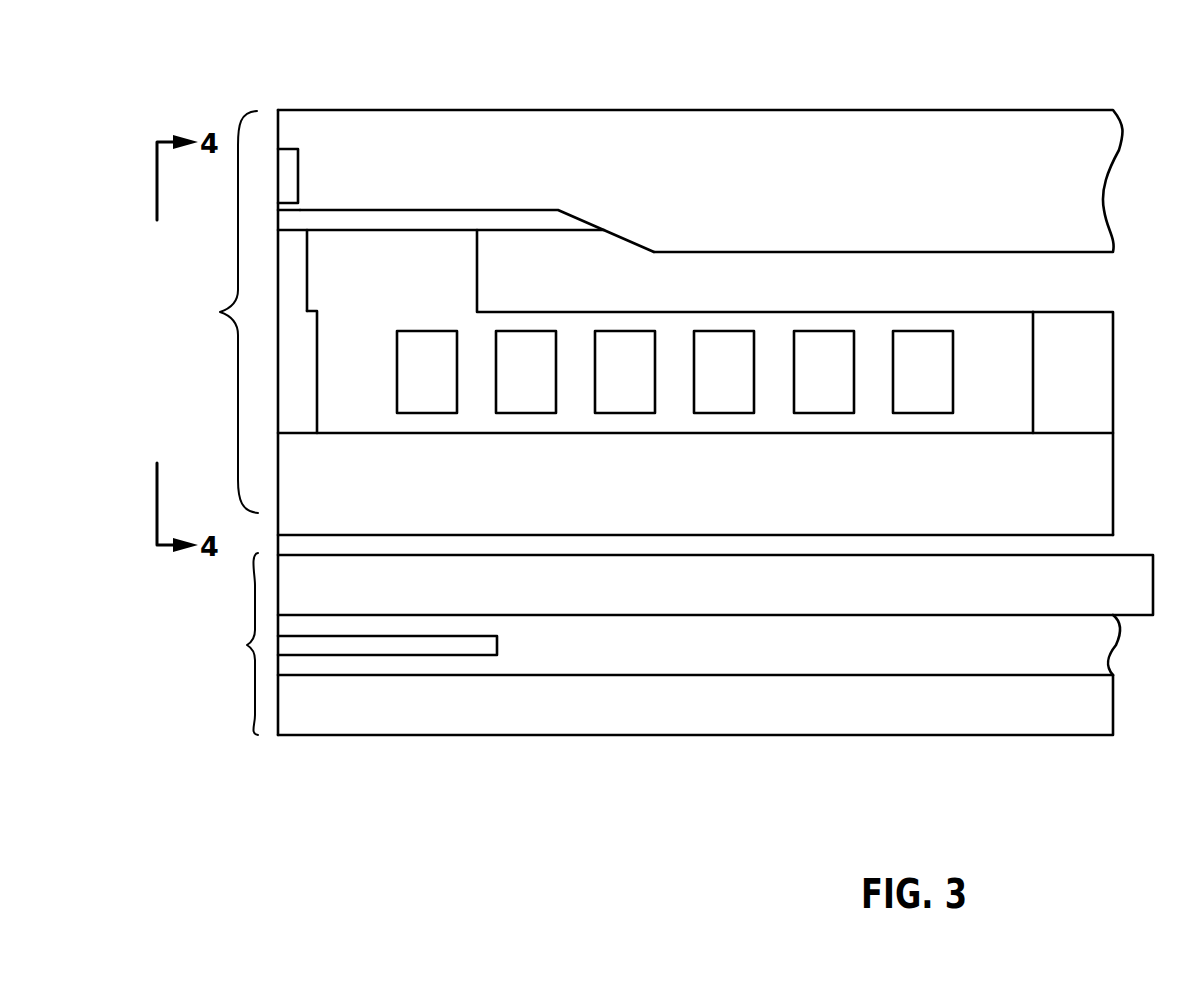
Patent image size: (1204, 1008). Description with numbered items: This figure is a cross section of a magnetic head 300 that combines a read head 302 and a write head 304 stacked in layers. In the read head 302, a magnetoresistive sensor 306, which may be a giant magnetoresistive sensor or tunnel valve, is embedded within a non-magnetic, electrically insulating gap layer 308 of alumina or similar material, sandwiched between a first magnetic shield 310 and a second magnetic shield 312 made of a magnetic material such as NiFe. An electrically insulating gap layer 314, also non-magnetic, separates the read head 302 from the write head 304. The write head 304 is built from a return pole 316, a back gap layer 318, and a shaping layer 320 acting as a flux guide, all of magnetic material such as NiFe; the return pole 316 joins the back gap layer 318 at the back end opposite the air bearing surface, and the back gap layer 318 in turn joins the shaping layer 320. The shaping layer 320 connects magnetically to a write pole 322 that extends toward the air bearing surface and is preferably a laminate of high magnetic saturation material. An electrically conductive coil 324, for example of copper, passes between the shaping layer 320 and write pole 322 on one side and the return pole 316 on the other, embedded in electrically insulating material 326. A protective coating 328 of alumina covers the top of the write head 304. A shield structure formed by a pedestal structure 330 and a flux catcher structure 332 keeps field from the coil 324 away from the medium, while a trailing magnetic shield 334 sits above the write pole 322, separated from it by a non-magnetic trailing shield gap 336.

The magnetic head 300 is at (965, 90).
The read head 302 is at (253, 697).
The write head 304 is at (239, 108).
The magnetoresistive sensor 306 is at (497, 647).
The gap layer 308 is at (852, 642).
The first magnetic shield 310 is at (748, 702).
The second magnetic shield 312 is at (770, 582).
The electrically insulating gap layer 314 is at (1097, 547).
The return pole 316 is at (750, 481).
The back gap layer 318 is at (1083, 373).
The shaping layer 320 is at (792, 278).
The write pole 322 is at (470, 218).
The electrically conductive coil 324 is at (827, 414).
The non-magnetic, electrically insulating material 326 is at (444, 305).
The protective coating 328 is at (883, 175).
The pedestal structure 330 is at (307, 372).
The flux catcher structure 332 is at (297, 272).
The trailing magnetic shield 334 is at (298, 172).
The trailing shield gap 336 is at (297, 211).